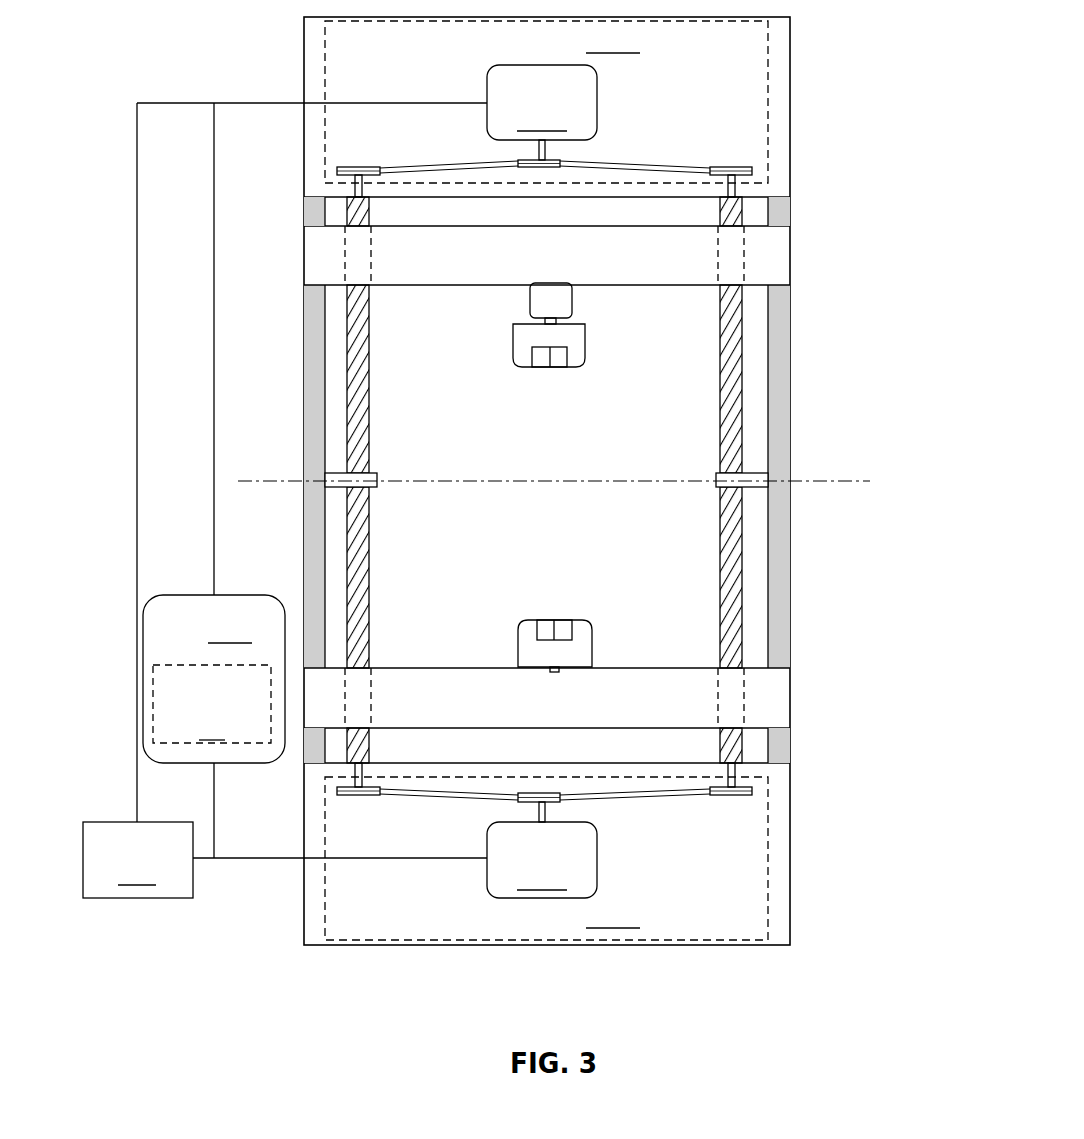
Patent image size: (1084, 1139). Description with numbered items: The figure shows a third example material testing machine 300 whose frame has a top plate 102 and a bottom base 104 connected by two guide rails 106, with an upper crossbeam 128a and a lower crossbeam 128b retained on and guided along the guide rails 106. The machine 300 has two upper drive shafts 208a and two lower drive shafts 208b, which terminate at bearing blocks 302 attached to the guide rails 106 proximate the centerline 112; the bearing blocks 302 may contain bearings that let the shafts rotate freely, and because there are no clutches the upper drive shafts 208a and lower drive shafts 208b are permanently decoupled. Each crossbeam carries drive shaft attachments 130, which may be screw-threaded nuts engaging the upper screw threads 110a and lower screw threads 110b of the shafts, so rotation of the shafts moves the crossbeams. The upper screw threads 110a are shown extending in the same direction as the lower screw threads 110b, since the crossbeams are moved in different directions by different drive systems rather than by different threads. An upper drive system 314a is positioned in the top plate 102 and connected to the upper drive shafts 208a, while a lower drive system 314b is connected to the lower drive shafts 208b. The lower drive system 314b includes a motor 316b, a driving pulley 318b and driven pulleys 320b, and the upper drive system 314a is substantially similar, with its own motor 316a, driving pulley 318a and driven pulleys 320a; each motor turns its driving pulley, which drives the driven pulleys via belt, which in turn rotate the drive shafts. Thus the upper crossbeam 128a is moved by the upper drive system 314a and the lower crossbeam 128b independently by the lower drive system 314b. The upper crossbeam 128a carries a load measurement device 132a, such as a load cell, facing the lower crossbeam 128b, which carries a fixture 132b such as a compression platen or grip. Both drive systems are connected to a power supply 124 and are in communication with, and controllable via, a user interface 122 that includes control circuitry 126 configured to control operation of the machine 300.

The material testing machine 300 is at (845, 112).
The top plate 102 is at (293, 170).
The bottom base 104 is at (815, 895).
The guide rails 106 is at (297, 366).
The upper screw threads 110a is at (370, 414).
The lower screw threads 110b is at (370, 545).
The centerline 112 is at (875, 479).
The user interface 122 is at (214, 480).
The power supply 124 is at (285, 500).
The control circuitry 126 is at (212, 704).
The upper crossbeam 128a is at (834, 234).
The lower crossbeam 128b is at (813, 703).
The drive shaft attachments 130 is at (372, 257).
The load measurement device 132a is at (523, 300).
The fixture 132b is at (560, 605).
The upper drive shafts 208a is at (565, 324).
The lower drive shafts 208b is at (550, 637).
The bearing blocks 302 is at (322, 479).
The upper drive system 314a is at (546, 102).
The lower drive system 314b is at (546, 858).
The motor 316a is at (542, 116).
The motor 316b is at (542, 845).
The driving pulley 318a is at (572, 158).
The driving pulley 318b is at (573, 802).
The driven pulleys 320a is at (353, 160).
The driven pulleys 320b is at (353, 800).